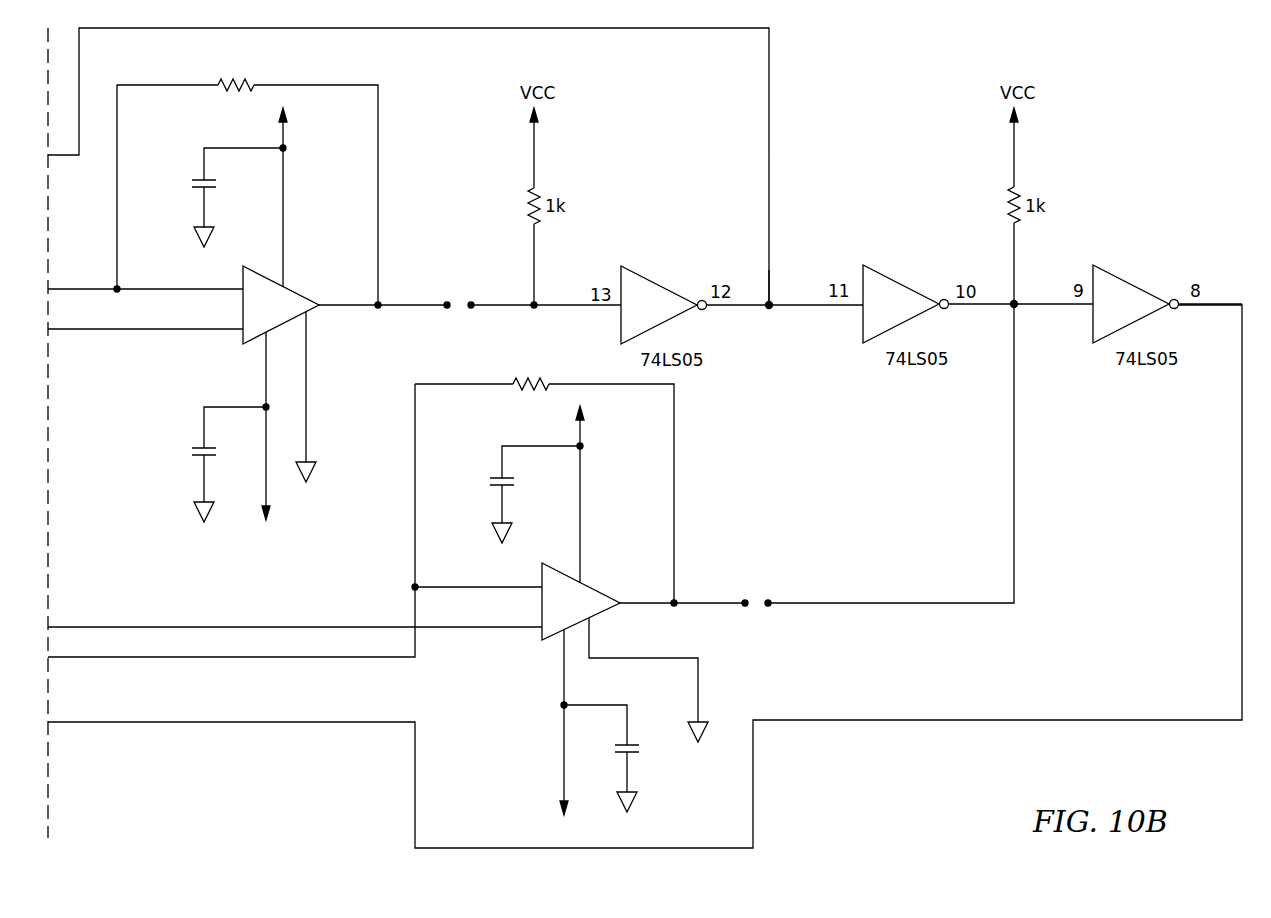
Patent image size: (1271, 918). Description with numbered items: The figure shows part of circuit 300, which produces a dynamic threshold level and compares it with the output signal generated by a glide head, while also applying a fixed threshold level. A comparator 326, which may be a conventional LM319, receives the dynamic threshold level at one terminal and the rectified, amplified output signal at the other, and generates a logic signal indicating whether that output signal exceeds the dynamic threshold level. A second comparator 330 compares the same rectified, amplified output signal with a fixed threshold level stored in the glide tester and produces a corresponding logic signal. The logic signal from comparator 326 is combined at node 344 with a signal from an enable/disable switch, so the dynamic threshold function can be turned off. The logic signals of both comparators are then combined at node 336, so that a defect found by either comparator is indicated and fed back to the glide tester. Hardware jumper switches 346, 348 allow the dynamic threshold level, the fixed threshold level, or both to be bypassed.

The circuit 300 is at (1148, 98).
The comparator 326 is at (326, 373).
The second comparator 330 is at (723, 648).
The node 336 is at (1015, 304).
The node 344 is at (770, 304).
The hardware jumper switch 346 is at (455, 252).
The hardware jumper switch 348 is at (765, 551).